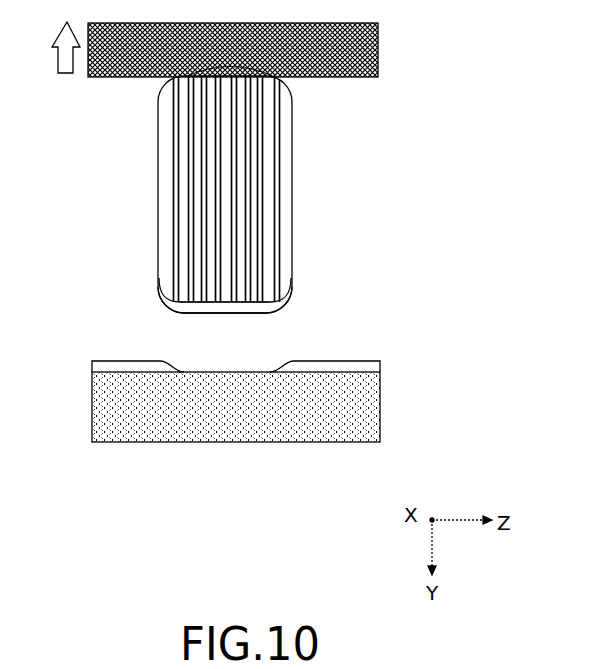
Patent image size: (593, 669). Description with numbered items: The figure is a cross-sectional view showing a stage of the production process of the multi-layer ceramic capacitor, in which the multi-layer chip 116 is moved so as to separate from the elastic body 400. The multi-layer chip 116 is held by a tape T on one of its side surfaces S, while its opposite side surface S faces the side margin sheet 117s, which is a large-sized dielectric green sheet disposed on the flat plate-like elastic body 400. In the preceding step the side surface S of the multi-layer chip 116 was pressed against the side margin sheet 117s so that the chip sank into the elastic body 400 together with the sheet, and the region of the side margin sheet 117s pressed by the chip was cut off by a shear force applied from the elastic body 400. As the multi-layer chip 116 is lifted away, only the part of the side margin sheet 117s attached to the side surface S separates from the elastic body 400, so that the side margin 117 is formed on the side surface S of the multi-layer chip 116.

The tape T is at (378, 48).
The side surface S is at (180, 77).
The multi-layer chip 116 is at (306, 204).
The side margin 117 is at (291, 299).
The side margin sheet 117s is at (382, 361).
The elastic body 400 is at (382, 405).